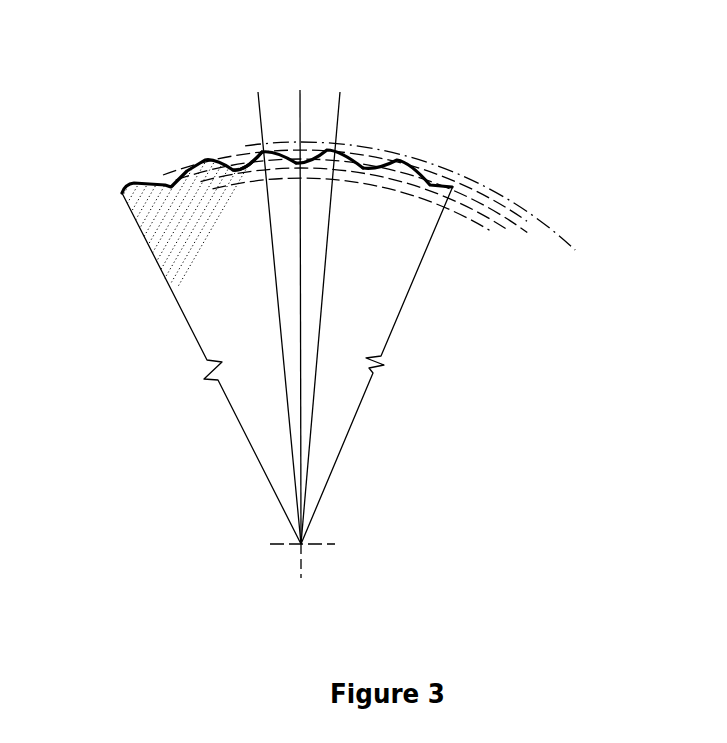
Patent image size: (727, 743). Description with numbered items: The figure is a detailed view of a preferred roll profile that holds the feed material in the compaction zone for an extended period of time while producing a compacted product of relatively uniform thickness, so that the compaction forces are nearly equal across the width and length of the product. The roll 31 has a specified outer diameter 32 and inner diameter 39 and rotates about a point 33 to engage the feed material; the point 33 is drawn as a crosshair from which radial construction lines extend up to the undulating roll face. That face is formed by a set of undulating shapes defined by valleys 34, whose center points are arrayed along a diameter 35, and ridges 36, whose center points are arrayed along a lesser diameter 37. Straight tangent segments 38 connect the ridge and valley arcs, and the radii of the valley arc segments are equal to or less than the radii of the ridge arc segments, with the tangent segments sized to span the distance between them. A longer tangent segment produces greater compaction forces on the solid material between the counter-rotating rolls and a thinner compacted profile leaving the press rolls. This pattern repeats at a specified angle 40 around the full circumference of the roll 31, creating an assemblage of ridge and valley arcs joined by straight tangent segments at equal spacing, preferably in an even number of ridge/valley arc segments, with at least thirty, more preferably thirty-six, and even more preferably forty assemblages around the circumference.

The roll 31 is at (130, 182).
The outer diameter 32 is at (562, 239).
The point 33 is at (306, 548).
The valleys 34 is at (293, 168).
The diameter 35 is at (529, 223).
The ridges 36 is at (330, 177).
The lesser diameter 37 is at (479, 211).
The straight tangent segments 38 is at (310, 152).
The inner diameter 39 is at (502, 216).
The angle 40 is at (237, 400).